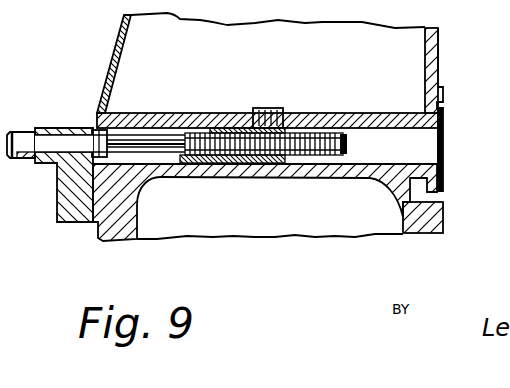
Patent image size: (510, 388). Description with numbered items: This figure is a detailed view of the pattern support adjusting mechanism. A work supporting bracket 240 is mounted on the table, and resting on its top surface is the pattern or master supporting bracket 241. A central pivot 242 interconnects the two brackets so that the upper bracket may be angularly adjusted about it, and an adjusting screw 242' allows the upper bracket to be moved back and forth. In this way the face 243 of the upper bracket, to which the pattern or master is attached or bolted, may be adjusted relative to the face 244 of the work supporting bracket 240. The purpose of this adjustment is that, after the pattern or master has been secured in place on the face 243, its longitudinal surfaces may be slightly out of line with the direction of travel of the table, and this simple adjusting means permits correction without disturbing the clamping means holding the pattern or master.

The work supporting bracket 240 is at (113, 242).
The pattern or master supporting bracket 241 is at (116, 49).
The central pivot 242 is at (283, 104).
The adjusting screw 242' is at (275, 125).
The face 243 is at (444, 55).
The face 244 is at (447, 219).